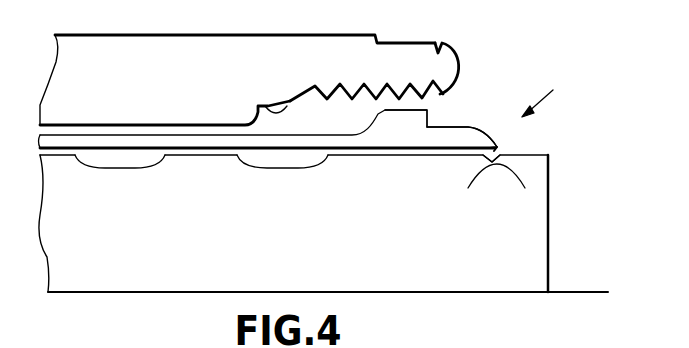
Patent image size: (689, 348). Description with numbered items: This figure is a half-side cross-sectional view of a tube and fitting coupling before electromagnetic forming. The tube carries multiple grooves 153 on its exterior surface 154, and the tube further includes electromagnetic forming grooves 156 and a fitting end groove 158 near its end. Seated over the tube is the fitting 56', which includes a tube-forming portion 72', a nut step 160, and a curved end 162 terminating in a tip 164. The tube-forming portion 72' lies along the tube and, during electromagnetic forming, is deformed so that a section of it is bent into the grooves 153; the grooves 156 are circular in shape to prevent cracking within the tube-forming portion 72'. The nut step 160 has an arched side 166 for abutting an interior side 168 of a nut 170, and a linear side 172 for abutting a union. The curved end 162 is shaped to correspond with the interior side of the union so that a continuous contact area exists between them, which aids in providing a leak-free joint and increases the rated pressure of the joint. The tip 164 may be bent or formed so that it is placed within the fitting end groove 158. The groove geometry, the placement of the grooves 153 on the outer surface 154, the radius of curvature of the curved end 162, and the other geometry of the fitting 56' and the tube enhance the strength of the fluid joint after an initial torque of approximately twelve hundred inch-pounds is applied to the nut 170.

The nut 170 is at (192, 35).
The tube-forming portion 72' is at (268, 115).
The fitting 56' is at (251, 123).
The interior side of nut 168 is at (287, 106).
The arched side 166 is at (372, 120).
The nut step 160 is at (406, 110).
The linear side 172 is at (430, 118).
The curved end 162 is at (482, 127).
The tip 164 is at (500, 148).
The exterior surface 154 is at (538, 153).
The grooves 153 is at (143, 168).
The electromagnetic forming grooves 156 is at (115, 168).
The fitting end groove 158 is at (515, 186).